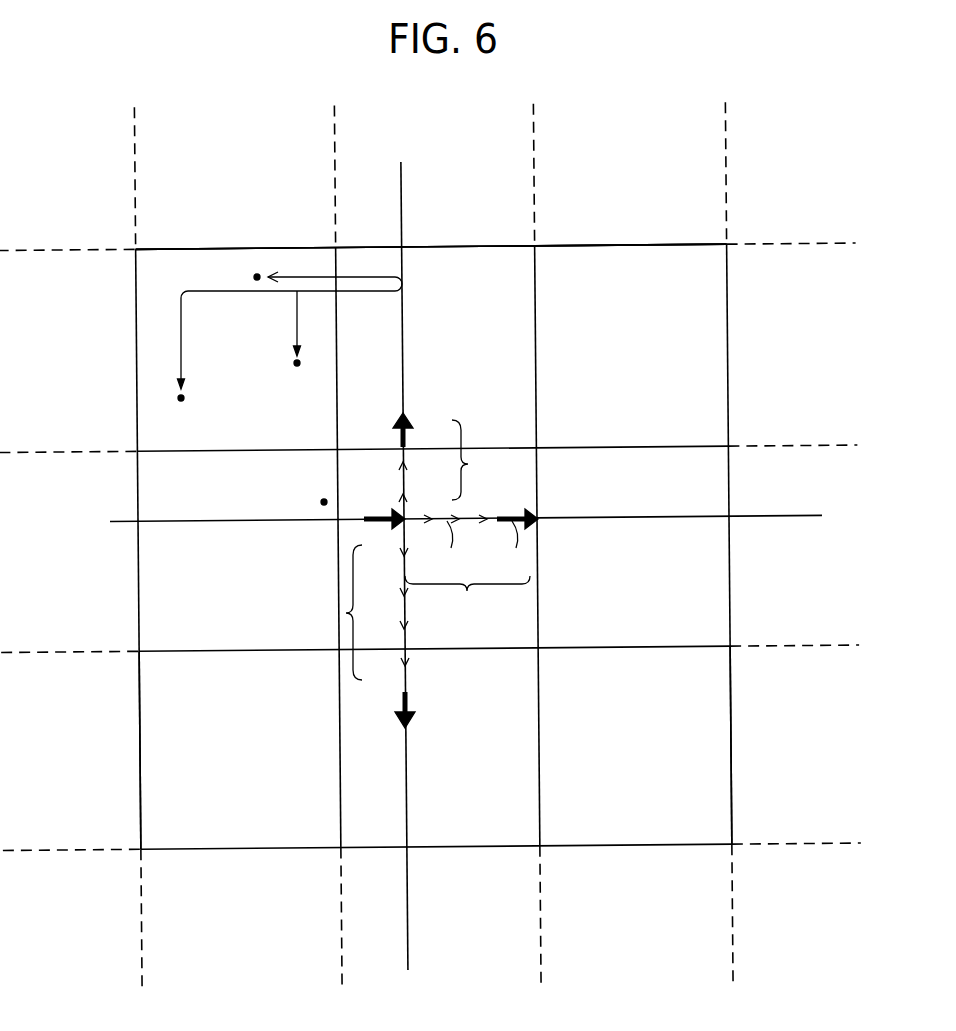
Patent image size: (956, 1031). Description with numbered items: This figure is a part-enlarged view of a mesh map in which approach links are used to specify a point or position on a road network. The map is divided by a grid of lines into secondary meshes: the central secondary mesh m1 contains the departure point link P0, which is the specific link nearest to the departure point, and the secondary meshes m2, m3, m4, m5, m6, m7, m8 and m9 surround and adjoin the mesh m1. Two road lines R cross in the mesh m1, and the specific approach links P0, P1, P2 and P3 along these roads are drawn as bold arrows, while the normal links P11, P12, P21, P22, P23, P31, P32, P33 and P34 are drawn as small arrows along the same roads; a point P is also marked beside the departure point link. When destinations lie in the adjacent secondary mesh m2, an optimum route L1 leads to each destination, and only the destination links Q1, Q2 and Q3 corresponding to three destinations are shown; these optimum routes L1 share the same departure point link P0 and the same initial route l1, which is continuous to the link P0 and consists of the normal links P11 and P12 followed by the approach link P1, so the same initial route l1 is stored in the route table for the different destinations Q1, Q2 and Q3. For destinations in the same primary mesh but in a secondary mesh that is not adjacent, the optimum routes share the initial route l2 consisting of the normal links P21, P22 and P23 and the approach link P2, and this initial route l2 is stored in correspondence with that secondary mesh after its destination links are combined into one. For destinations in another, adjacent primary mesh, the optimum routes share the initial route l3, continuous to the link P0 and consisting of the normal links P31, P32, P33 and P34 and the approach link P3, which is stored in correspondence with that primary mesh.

The reference lines R is at (775, 514).
The secondary mesh m1 is at (537, 488).
The secondary mesh m2 is at (175, 262).
The secondary mesh m3 is at (358, 262).
The secondary mesh m4 is at (565, 268).
The secondary mesh m5 is at (713, 616).
The secondary mesh m6 is at (715, 818).
The secondary mesh m7 is at (497, 838).
The secondary mesh m8 is at (152, 783).
The secondary mesh m9 is at (145, 582).
The optimum route L1 is at (315, 303).
The destination link Q1 is at (236, 276).
The destination link Q2 is at (304, 378).
The destination link Q3 is at (195, 413).
The point P is at (319, 488).
The departure point link P0 is at (398, 517).
The approach link P1 is at (418, 430).
The approach link P2 is at (517, 544).
The approach link P3 is at (419, 711).
The normal link P11 is at (424, 496).
The normal link P12 is at (424, 471).
The normal link P21 is at (423, 533).
The normal link P22 is at (455, 547).
The normal link P23 is at (493, 533).
The normal link P31 is at (384, 560).
The normal link P32 is at (384, 594).
The normal link P33 is at (384, 628).
The normal link P34 is at (384, 664).
The initial route l1 is at (474, 460).
The initial route l2 is at (467, 599).
The initial route l3 is at (333, 612).